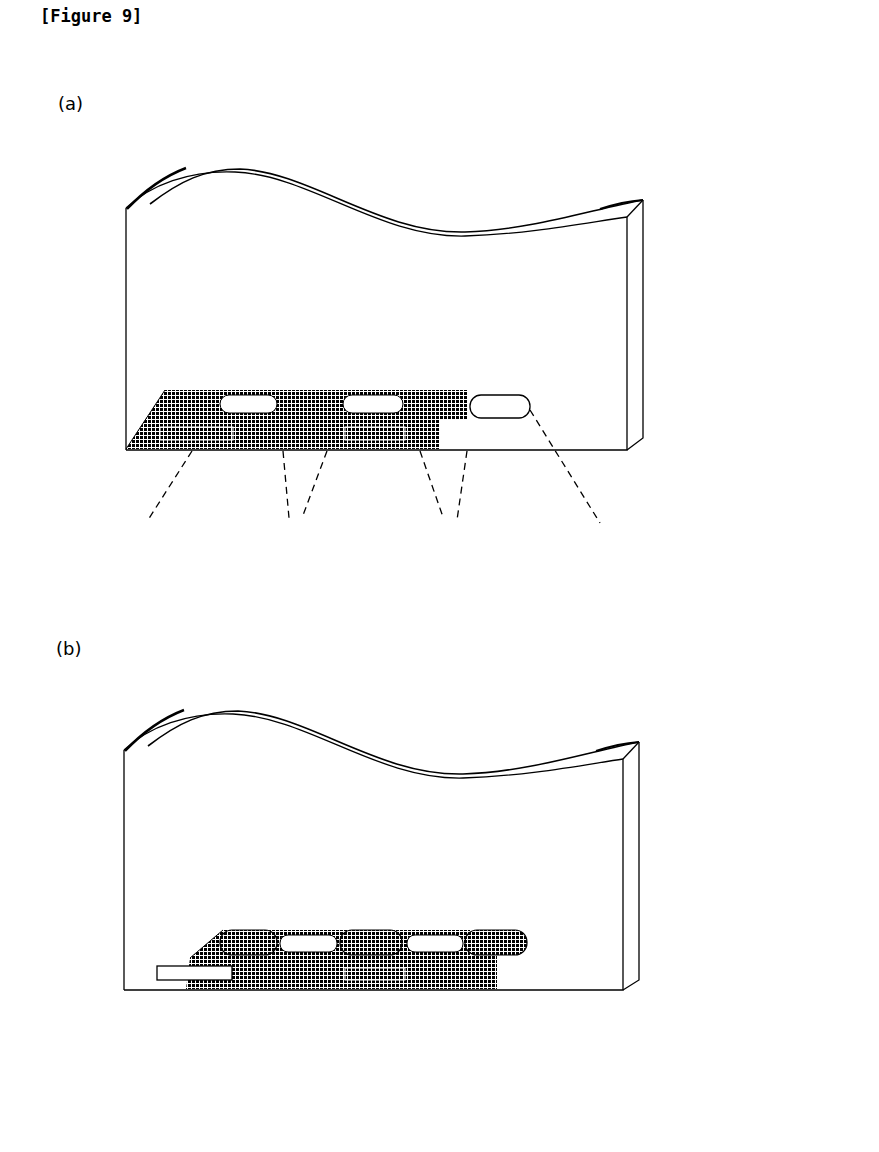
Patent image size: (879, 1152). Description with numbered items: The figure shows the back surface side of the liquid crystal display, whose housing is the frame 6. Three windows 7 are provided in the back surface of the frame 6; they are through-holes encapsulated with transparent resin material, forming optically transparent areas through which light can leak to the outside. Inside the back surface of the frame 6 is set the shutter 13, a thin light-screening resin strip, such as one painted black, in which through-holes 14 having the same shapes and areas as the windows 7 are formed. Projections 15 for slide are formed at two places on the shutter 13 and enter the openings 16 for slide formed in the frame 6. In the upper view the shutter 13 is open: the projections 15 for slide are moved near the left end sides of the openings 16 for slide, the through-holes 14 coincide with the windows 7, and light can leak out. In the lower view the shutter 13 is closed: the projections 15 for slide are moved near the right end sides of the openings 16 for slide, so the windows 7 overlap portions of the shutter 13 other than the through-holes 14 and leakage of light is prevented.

In FIG. 9A, the frame 6 is at (660, 306).
In FIG. 9B, the frame 6 is at (658, 846).
In FIG. 9A, the windows 7 is at (275, 395).
In FIG. 9B, the windows 7 is at (258, 930).
In FIG. 9A, the shutter 13 is at (200, 390).
In FIG. 9B, the shutter 13 is at (215, 948).
In FIG. 9A, the through-holes 14 is at (525, 397).
In FIG. 9B, the through-holes 14 is at (310, 930).
In FIG. 9A, the projections for slide 15 is at (145, 445).
In FIG. 9B, the projections for slide 15 is at (240, 985).
In FIG. 9A, the openings for slide 16 is at (215, 450).
In FIG. 9B, the openings for slide 16 is at (168, 975).